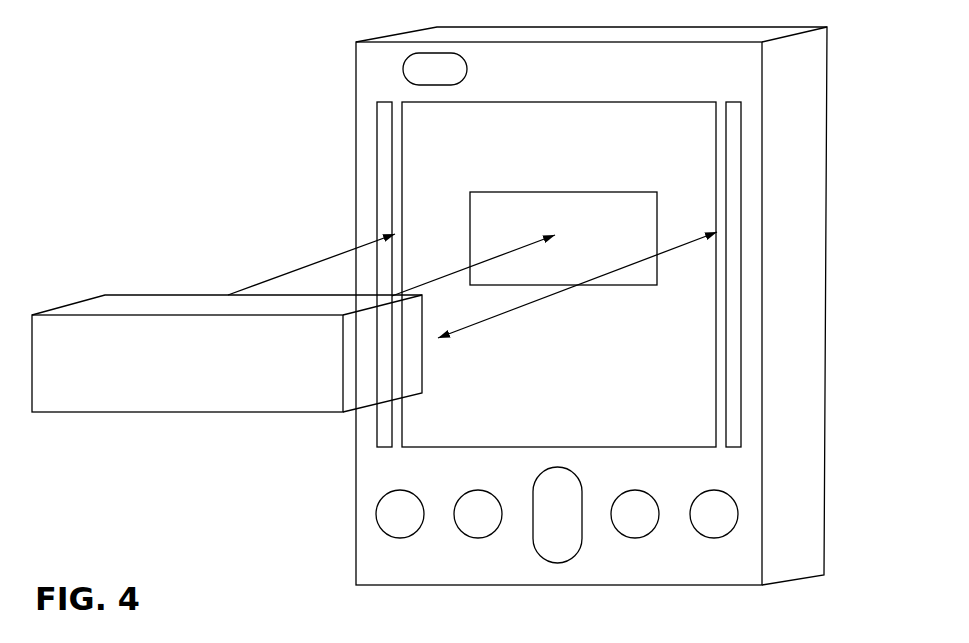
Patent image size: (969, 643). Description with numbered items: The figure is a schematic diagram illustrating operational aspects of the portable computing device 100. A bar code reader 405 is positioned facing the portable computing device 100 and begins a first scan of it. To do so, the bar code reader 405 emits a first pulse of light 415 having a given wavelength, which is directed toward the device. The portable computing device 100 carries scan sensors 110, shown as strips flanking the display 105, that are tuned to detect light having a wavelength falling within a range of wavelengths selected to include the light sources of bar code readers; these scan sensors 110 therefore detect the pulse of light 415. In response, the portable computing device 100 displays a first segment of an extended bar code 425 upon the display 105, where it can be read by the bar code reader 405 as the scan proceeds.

The portable computing device 100 is at (827, 174).
The display 105 is at (557, 102).
The scan sensors 110 is at (377, 190).
The bar code reader 405 is at (227, 413).
The first pulse of light 415 is at (292, 272).
The extended bar code 425 is at (563, 238).